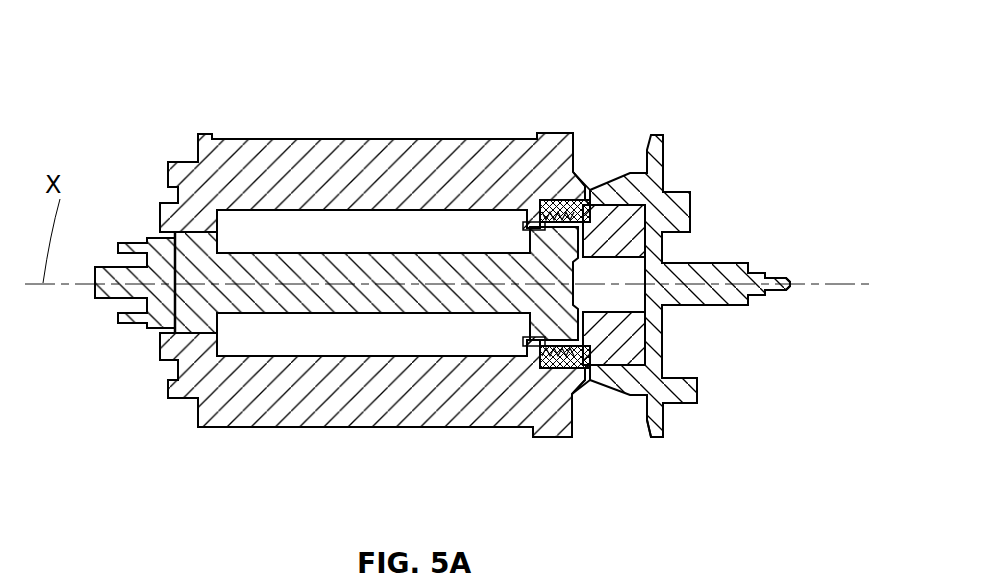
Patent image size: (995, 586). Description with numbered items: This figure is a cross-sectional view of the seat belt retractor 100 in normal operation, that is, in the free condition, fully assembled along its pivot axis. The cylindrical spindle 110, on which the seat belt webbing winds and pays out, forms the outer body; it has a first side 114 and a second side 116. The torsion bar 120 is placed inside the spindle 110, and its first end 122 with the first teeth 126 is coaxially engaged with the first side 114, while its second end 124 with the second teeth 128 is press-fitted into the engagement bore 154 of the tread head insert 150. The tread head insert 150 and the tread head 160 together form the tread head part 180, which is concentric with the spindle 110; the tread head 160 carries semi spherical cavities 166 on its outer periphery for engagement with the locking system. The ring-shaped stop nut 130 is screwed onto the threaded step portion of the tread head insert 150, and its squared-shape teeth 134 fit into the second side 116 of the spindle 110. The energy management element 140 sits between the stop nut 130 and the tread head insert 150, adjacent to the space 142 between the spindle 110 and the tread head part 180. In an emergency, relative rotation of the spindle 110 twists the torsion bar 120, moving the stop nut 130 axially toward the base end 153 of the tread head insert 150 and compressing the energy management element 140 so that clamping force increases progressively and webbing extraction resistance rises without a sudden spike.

The seat belt retractor 100 is at (158, 42).
The spindle 110 is at (252, 150).
The first side 114 is at (155, 245).
The second side 116 is at (566, 382).
The torsion bar 120 is at (366, 265).
The first end 122 is at (160, 323).
The second end 124 is at (515, 335).
The first teeth 126 is at (200, 365).
The second teeth 128 is at (570, 328).
The stop nut 130 is at (543, 200).
The squared-shape teeth 134 is at (545, 372).
The energy management element 140 is at (597, 178).
The space 142 is at (576, 188).
The tread head insert 150 is at (627, 230).
The base end 153 is at (532, 213).
The engagement bore 154 is at (566, 372).
The tread head 160 is at (705, 263).
The semi spherical cavities 166 is at (622, 395).
The tread head part 180 is at (833, 240).